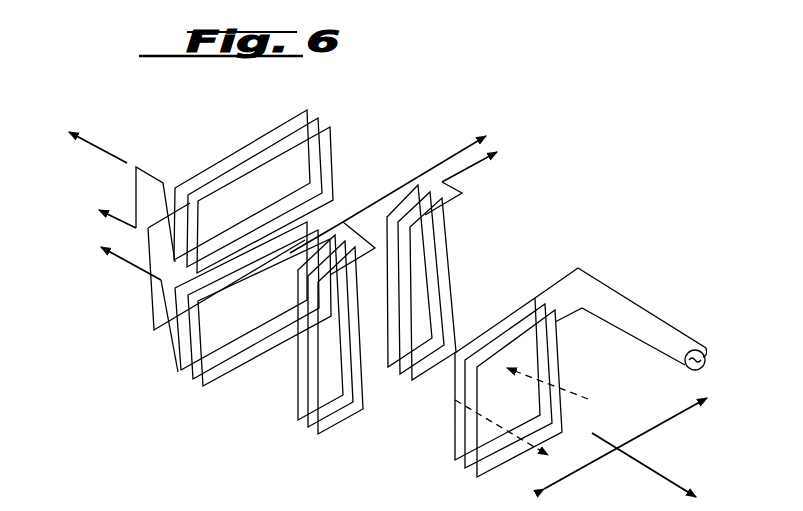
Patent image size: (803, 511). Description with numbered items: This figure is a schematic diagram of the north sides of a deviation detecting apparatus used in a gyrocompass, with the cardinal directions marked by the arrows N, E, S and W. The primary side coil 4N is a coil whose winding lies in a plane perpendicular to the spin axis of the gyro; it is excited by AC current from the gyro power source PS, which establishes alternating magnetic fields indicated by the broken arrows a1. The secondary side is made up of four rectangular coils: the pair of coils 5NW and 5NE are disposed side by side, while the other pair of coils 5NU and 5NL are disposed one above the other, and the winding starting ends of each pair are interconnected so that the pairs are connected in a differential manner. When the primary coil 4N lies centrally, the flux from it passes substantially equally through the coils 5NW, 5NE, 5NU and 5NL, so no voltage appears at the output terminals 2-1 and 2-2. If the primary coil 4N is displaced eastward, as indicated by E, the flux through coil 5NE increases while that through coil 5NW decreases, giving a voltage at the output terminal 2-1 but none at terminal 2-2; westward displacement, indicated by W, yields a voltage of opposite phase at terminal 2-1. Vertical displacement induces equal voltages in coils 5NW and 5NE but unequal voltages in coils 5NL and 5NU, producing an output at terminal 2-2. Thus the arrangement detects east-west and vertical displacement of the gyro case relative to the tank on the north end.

The secondary coil (upper) 5NU is at (315, 106).
The secondary coil (lower) 5NL is at (183, 374).
The secondary coil (west) 5NW is at (309, 432).
The secondary coil (east) 5NE is at (446, 231).
The primary side coil 4N is at (462, 468).
The gyro power source PS is at (694, 345).
The output terminal 2-1 is at (500, 131).
The output terminal 2-2 is at (108, 222).
The alternating magnetic field (broken arrow) a1 is at (582, 404).
The north direction N is at (94, 129).
The east direction E is at (636, 435).
The south direction S is at (655, 472).
The west direction W is at (516, 496).